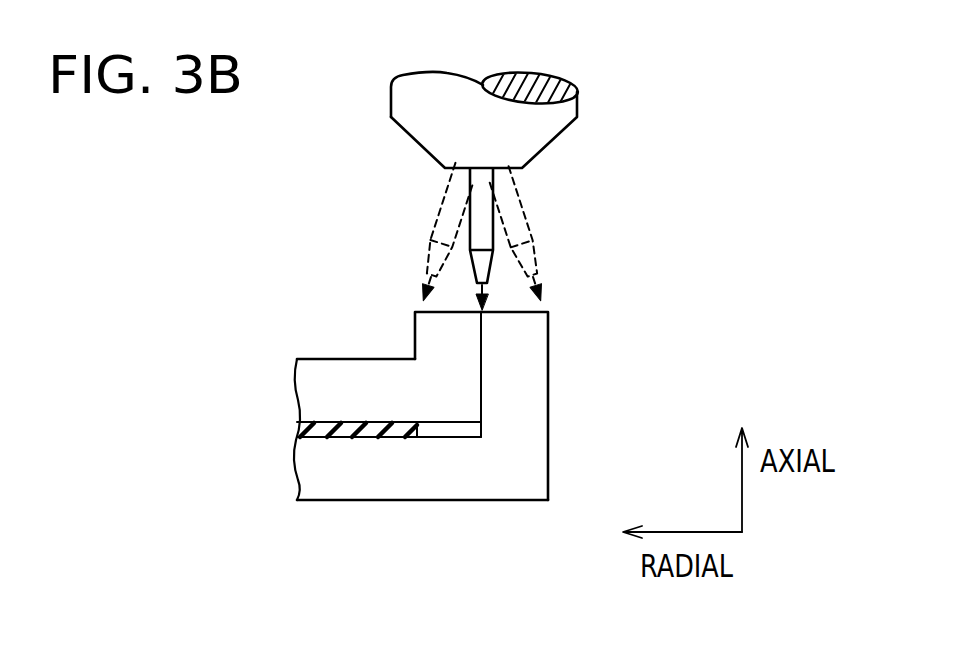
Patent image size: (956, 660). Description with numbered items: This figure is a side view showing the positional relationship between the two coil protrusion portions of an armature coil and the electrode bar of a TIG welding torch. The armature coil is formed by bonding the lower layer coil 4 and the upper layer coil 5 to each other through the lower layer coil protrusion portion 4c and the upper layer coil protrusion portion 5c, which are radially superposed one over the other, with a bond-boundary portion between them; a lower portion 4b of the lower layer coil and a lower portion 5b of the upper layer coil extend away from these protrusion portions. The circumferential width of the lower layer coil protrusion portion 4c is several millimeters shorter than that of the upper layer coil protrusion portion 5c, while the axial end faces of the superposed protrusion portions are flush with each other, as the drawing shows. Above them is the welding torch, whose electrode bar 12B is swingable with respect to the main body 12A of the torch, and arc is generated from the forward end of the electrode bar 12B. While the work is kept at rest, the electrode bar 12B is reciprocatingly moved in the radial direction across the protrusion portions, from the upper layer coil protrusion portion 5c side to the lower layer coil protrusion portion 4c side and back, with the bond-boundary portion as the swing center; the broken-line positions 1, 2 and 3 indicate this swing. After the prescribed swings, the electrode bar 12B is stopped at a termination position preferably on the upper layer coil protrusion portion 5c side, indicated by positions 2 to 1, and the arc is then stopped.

The main body of the torch 12A is at (578, 97).
The electrode bar 12B is at (496, 222).
The swing position 1 is at (442, 210).
The swing position 2 is at (495, 236).
The swing position 3 is at (540, 257).
The lower layer coil 4 is at (424, 443).
The lower portion of base member 4b is at (322, 457).
The lower layer coil protrusion portion 4c is at (525, 338).
The upper layer coil 5 is at (349, 351).
The lower portion of bonded member 5b is at (320, 387).
The upper layer coil protrusion portion 5c is at (433, 332).